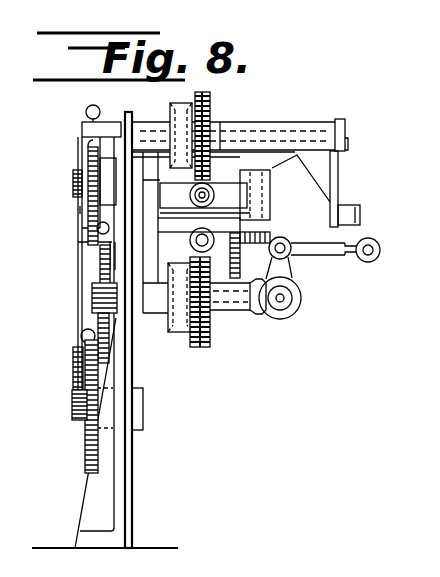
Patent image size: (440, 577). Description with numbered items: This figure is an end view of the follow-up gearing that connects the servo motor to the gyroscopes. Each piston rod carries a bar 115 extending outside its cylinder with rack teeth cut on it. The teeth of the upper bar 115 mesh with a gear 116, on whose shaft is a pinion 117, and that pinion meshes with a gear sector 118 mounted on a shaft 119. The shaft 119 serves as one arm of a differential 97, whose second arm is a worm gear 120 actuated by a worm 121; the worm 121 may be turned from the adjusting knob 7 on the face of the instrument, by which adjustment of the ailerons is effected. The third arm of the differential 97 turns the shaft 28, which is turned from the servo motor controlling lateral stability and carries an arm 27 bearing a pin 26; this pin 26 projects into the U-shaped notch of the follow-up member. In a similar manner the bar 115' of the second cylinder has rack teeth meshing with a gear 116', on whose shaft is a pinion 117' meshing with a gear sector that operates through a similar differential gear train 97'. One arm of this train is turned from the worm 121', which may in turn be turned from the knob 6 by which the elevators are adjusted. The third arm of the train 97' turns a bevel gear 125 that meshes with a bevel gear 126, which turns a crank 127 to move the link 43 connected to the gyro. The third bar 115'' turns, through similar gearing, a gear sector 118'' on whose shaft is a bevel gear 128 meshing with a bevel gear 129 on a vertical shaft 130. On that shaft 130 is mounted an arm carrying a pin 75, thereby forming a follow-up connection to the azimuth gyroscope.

The bar 115 is at (116, 110).
The shaft 119 is at (175, 112).
The differential 97 is at (219, 136).
The worm gear 120 is at (232, 124).
The shaft 28 is at (292, 122).
The pin 75 is at (347, 130).
The arm 27 is at (340, 177).
The pin 26 is at (360, 205).
The vertical shaft 130 is at (270, 190).
The worm 121 is at (203, 195).
The adjusting knob 7 is at (215, 195).
The knob 6 is at (213, 236).
The worm 121' is at (187, 244).
The differential gear train 97' is at (181, 312).
The bevel gear 125 is at (259, 314).
The bevel gear 126 is at (298, 306).
The crank 127 is at (285, 270).
The bevel gear 129 is at (283, 240).
The link 43 is at (368, 262).
The bevel gear 128 is at (240, 260).
The gear 116 is at (65, 192).
The pinion 117 is at (57, 183).
The gear sector 118 is at (56, 210).
The bar 115' is at (69, 236).
The gear 116' is at (70, 266).
The pinion 117' is at (75, 323).
The bar 115'' is at (65, 401).
The gear sector 118'' is at (60, 383).